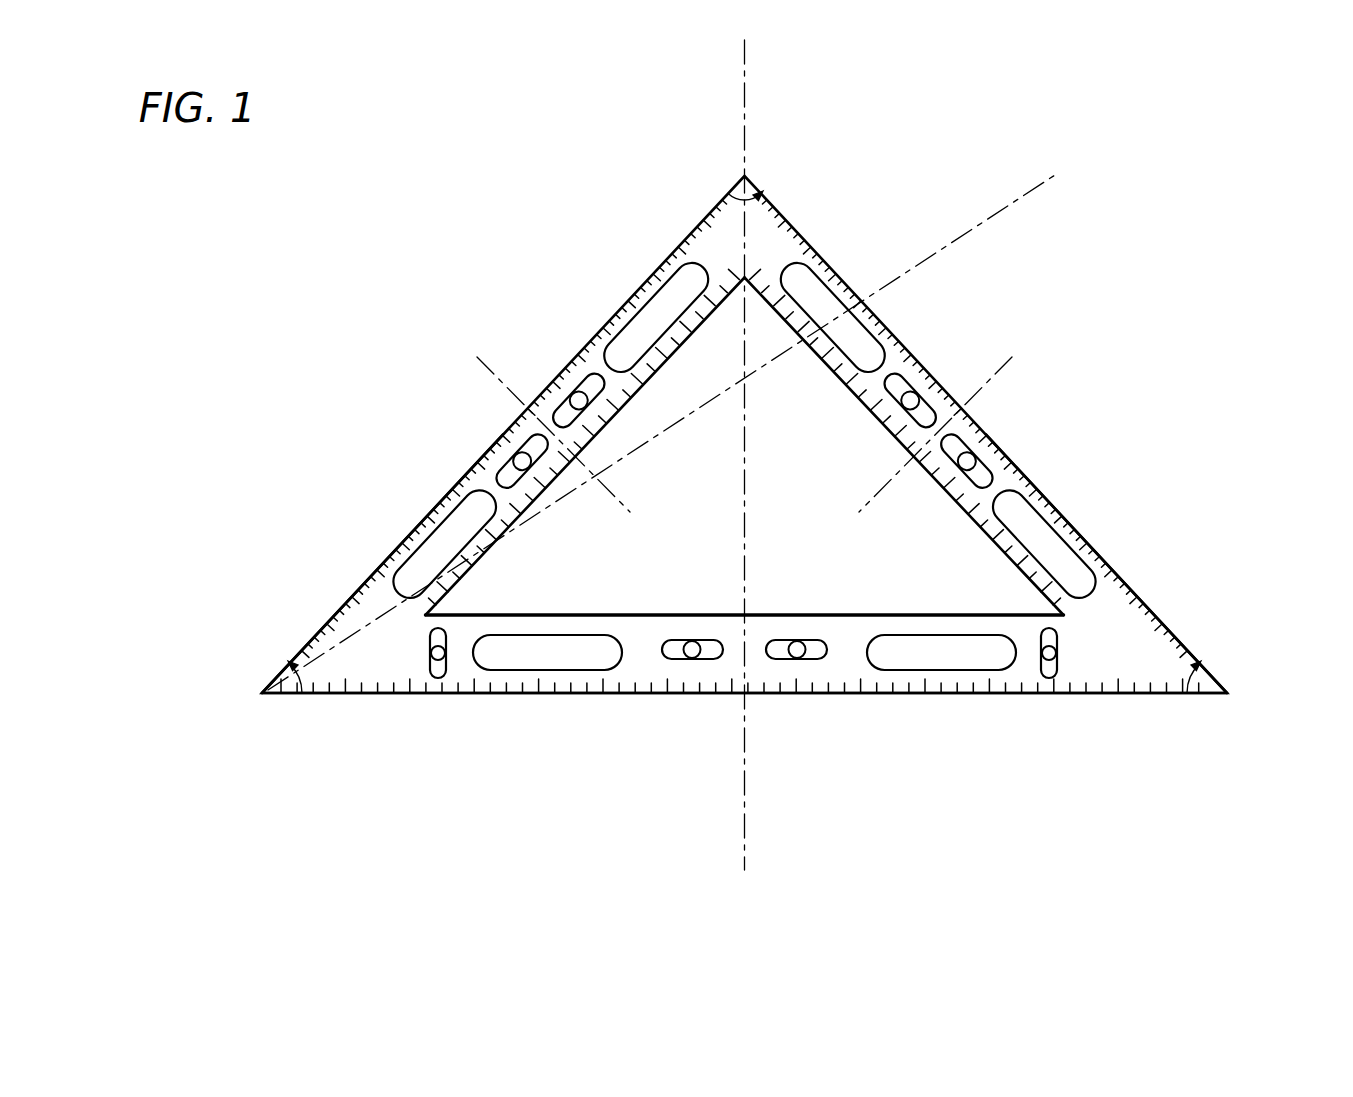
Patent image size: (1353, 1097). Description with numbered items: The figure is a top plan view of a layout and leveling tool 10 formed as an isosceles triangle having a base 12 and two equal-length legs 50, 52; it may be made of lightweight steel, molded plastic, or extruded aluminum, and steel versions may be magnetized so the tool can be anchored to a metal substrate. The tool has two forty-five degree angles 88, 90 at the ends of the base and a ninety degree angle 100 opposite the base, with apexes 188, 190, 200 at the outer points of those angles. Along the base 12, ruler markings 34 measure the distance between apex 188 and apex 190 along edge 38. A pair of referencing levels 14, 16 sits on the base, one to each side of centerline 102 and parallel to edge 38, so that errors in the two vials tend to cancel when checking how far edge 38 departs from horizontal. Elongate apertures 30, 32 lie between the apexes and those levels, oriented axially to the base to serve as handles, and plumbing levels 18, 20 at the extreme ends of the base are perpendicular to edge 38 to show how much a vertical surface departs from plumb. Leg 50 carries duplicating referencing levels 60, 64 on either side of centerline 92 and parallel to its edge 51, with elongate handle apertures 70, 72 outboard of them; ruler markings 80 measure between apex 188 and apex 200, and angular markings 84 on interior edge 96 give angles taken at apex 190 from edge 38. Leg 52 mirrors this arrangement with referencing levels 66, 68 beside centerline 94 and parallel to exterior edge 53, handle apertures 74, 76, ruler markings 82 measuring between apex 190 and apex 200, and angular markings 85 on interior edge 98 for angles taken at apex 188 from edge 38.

The tool 10 is at (1052, 129).
The base 12 is at (638, 770).
The referencing level 14 is at (717, 686).
The referencing level 16 is at (763, 686).
The plumbing level 18 is at (423, 682).
The plumbing level 20 is at (1049, 682).
The elongate aperture 30 is at (565, 672).
The elongate aperture 32 is at (925, 672).
The ruler markings 34 is at (863, 686).
The edge of base 38 is at (1130, 688).
The leg 50 is at (517, 383).
The edge of leg 50 51 is at (353, 595).
The leg 52 is at (965, 405).
The exterior edge of leg 52 53 is at (1136, 595).
The referencing level 60 is at (490, 449).
The referencing level 64 is at (568, 371).
The referencing level 66 is at (999, 449).
The referencing level 68 is at (921, 371).
The elongate aperture 70 is at (430, 509).
The elongate aperture 72 is at (634, 295).
The elongate aperture 74 is at (1059, 509).
The elongate aperture 76 is at (834, 271).
The ruler markings 80 is at (673, 252).
The ruler markings 82 is at (797, 232).
The angular markings 84 is at (611, 416).
The angular markings 85 is at (878, 416).
The angle 88 is at (298, 690).
The angle 90 is at (1192, 690).
The centerline 92 is at (477, 357).
The centerline 94 is at (1012, 357).
The interior edge of leg 50 96 is at (668, 360).
The interior edge of leg 52 98 is at (972, 520).
The angle 100 is at (728, 186).
The centerline 102 is at (745, 57).
The apex 188 is at (262, 693).
The apex 190 is at (1228, 694).
The apex 200 is at (748, 175).